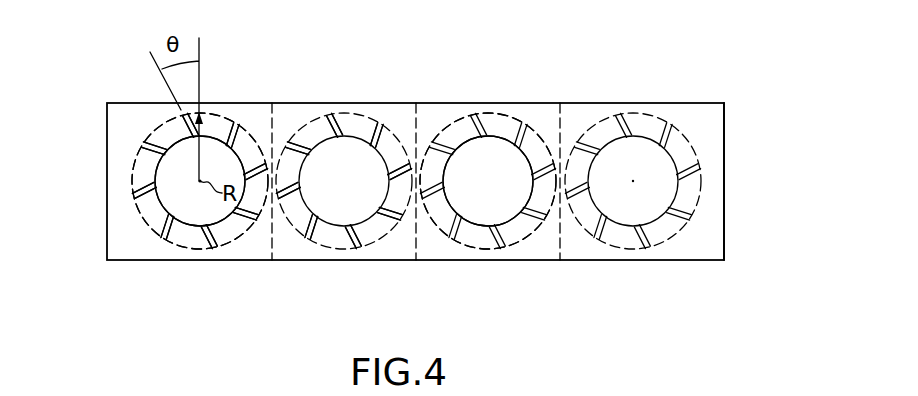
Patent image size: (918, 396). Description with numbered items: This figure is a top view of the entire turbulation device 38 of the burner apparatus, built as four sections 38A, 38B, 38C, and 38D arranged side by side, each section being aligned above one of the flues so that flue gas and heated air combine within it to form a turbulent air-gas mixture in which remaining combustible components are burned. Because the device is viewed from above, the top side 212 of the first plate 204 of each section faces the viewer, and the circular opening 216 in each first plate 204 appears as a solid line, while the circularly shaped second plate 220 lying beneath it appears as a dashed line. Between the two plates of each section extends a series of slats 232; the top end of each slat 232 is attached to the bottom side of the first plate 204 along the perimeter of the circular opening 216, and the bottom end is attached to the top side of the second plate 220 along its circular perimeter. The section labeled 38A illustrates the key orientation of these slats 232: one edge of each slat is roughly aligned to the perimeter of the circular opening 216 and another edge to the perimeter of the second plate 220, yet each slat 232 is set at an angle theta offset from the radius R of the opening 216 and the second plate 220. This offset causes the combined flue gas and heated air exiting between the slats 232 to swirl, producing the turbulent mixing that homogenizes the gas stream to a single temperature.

The turbulation device 38 is at (630, 63).
The turbulation device section 38A is at (233, 260).
The turbulation device section 38B is at (328, 260).
The turbulation device section 38C is at (455, 260).
The turbulation device section 38D is at (610, 260).
The first plate 204 is at (433, 110).
The top side 212 is at (708, 115).
The circular opening 216 is at (176, 175).
The second plate 220 is at (157, 126).
The slats 232 is at (293, 124).